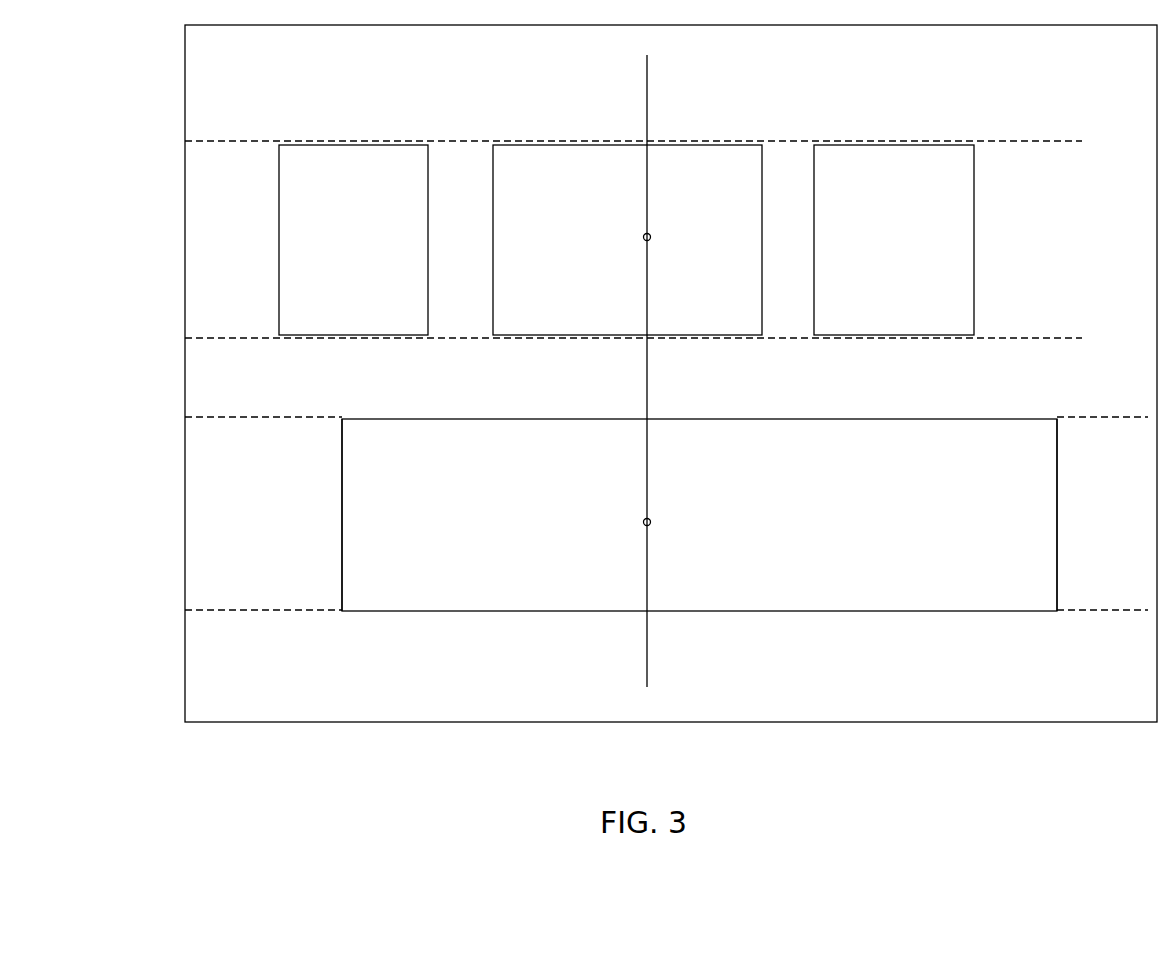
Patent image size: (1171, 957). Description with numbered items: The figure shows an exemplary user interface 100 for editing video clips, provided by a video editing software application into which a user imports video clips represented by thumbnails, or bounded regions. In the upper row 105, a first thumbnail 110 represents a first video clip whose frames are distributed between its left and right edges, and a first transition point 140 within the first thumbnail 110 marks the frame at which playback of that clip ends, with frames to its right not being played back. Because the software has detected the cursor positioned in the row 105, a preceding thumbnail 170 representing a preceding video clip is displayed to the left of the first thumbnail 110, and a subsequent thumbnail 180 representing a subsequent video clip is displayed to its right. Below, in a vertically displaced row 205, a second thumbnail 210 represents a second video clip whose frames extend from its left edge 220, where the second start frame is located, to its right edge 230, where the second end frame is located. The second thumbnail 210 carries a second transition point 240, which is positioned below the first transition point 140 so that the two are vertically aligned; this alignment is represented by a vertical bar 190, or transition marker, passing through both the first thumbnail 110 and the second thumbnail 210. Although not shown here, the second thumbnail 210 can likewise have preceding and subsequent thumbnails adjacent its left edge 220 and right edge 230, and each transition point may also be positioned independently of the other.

The user interface 100 is at (1082, 93).
The row 105 is at (1113, 317).
The first thumbnail 110 is at (598, 145).
The first transition point 140 is at (649, 234).
The preceding thumbnail 170 is at (323, 145).
The subsequent thumbnail 180 is at (904, 146).
The vertical bar 190 is at (647, 101).
The row 205 is at (258, 592).
The second thumbnail 210 is at (522, 613).
The left edge of the second thumbnail 220 is at (342, 508).
The right edge of the second thumbnail 230 is at (1057, 528).
The second transition point 240 is at (649, 519).